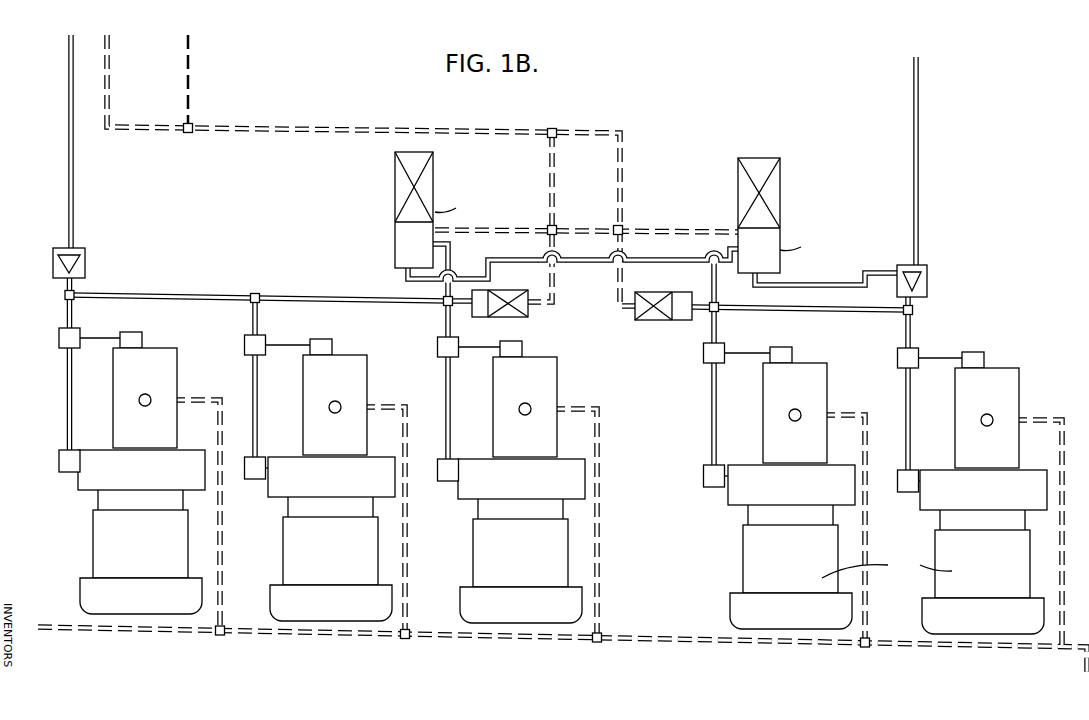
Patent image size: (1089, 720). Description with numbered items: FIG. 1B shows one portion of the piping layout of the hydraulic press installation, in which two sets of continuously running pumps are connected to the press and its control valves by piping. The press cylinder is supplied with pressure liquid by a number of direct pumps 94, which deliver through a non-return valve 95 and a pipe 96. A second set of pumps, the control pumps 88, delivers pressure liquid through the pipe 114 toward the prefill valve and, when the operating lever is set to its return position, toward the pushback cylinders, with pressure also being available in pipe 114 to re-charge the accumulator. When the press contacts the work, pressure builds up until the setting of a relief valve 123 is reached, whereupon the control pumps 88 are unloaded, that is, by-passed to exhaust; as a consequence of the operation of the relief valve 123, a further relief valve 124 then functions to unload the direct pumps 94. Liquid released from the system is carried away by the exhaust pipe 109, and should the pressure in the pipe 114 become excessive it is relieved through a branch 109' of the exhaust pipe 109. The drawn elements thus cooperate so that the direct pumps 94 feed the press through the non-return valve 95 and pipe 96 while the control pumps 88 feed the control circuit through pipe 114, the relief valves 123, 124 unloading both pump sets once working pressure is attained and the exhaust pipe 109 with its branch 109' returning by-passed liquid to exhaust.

The control pumps 88 is at (797, 576).
The direct pumps 94 is at (151, 561).
The non-return valve 95 is at (87, 257).
The pipe 96 is at (76, 172).
The exhaust pipe 109 is at (213, 81).
The branch of the exhaust pipe 109' is at (422, 170).
The pipe 114 is at (913, 85).
The relief valve 123 is at (768, 185).
The further relief valve 124 is at (412, 184).